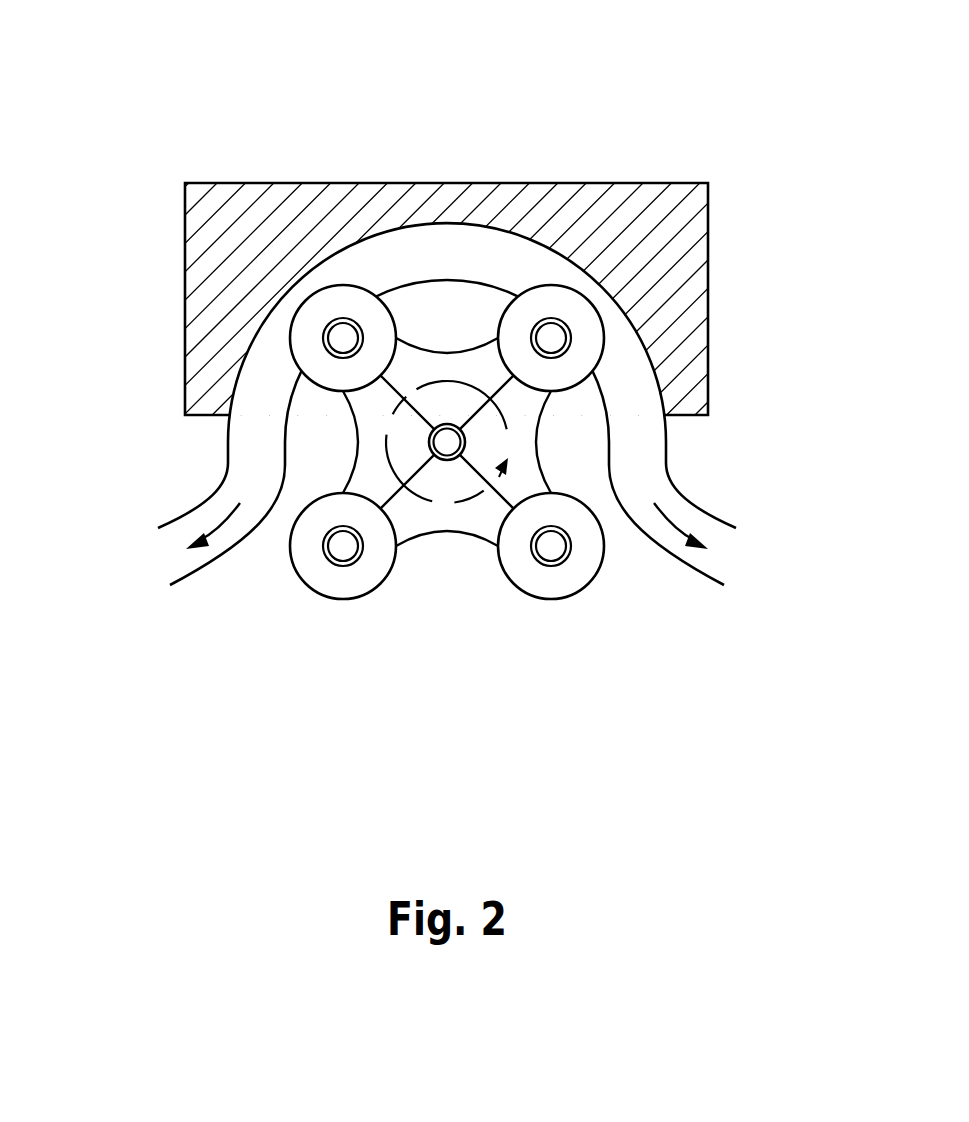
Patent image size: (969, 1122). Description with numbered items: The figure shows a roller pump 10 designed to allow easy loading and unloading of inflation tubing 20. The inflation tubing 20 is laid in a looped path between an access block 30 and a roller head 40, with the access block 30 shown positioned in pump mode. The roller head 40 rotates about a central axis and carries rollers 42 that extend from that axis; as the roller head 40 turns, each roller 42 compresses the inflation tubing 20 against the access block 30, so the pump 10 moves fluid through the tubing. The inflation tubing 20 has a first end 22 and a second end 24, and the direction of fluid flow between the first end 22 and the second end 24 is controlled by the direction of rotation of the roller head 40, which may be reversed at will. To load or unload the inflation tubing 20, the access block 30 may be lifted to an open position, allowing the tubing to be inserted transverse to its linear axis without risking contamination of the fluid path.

The pump 10 is at (624, 110).
The inflation tubing 20 is at (447, 250).
The first end 22 is at (696, 507).
The second end 24 is at (198, 507).
The access block 30 is at (343, 197).
The roller head 40 is at (447, 513).
The roller 42 is at (342, 598).